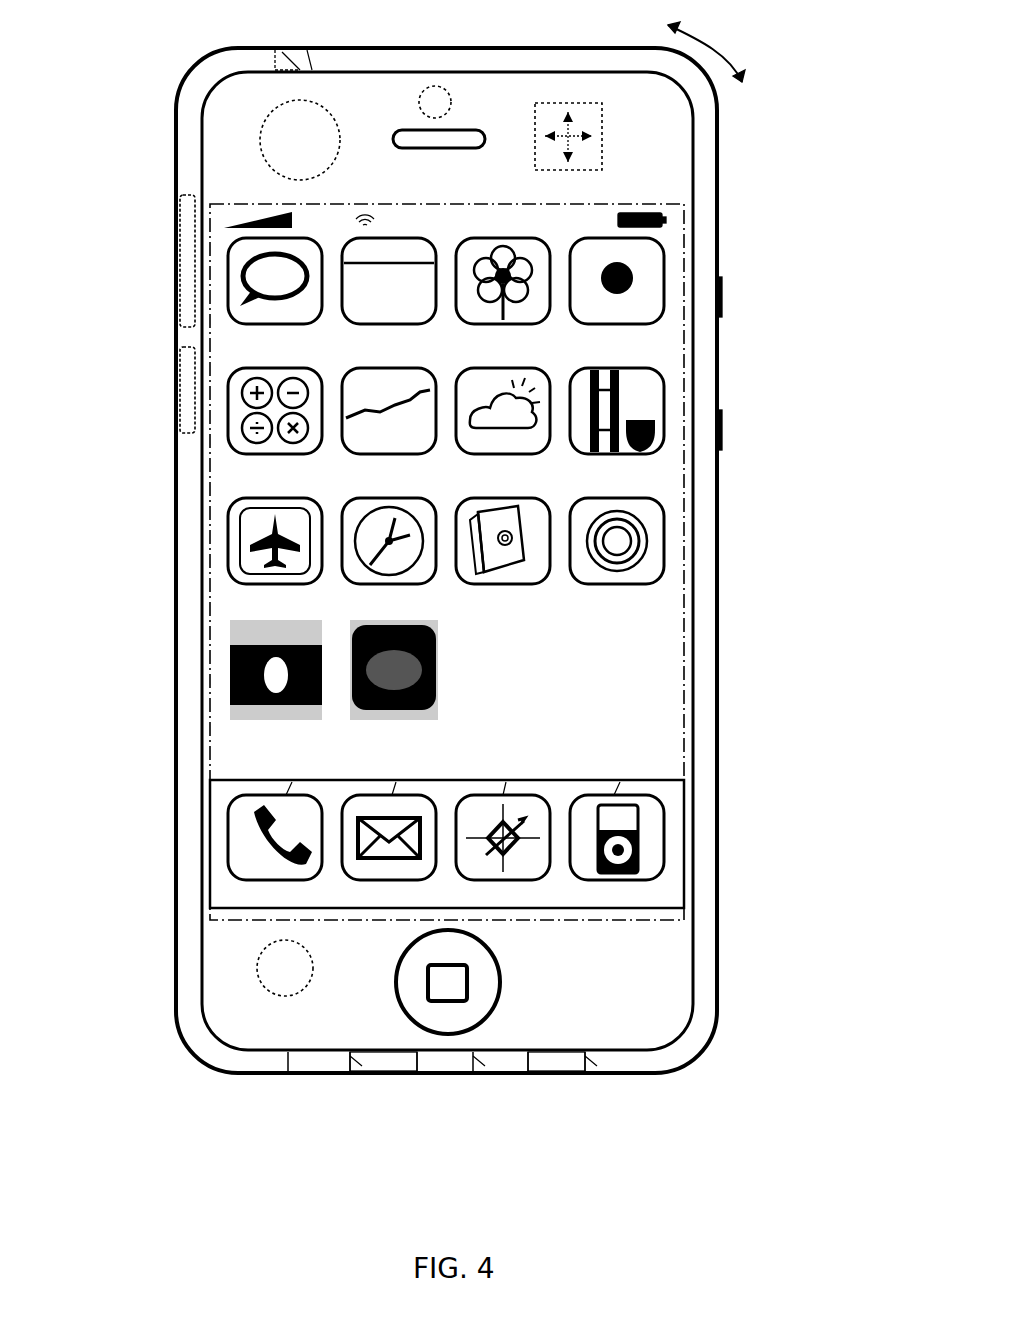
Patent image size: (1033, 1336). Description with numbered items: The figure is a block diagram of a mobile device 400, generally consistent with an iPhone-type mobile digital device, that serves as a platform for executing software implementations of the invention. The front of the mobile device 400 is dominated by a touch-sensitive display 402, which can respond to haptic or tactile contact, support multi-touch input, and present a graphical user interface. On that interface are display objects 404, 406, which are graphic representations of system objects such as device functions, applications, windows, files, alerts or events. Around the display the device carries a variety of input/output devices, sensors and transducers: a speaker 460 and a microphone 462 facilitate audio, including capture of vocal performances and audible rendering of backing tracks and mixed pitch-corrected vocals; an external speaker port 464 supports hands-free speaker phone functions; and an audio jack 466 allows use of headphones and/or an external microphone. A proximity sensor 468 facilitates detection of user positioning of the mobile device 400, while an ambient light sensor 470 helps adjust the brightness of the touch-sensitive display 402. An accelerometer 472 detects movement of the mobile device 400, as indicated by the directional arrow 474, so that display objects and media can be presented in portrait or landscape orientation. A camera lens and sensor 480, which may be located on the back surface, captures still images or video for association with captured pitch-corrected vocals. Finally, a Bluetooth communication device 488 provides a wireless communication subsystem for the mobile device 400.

The mobile device 400 is at (540, 47).
The touch-sensitive display 402 is at (628, 205).
The display object 404 is at (668, 796).
The display object 406 is at (668, 242).
The speaker 460 is at (420, 149).
The microphone 462 is at (370, 1075).
The external speaker port 464 is at (600, 1075).
The audio jack 466 is at (308, 48).
The proximity sensor 468 is at (262, 158).
The ambient light sensor 470 is at (305, 988).
The accelerometer 472 is at (600, 150).
The directional arrow 474 is at (740, 85).
The camera lens and sensor 480 is at (452, 100).
The Bluetooth communication device 488 is at (180, 340).